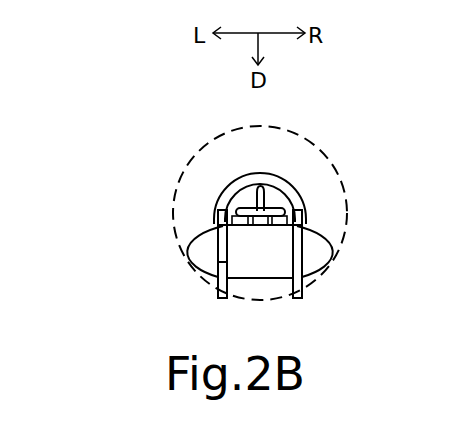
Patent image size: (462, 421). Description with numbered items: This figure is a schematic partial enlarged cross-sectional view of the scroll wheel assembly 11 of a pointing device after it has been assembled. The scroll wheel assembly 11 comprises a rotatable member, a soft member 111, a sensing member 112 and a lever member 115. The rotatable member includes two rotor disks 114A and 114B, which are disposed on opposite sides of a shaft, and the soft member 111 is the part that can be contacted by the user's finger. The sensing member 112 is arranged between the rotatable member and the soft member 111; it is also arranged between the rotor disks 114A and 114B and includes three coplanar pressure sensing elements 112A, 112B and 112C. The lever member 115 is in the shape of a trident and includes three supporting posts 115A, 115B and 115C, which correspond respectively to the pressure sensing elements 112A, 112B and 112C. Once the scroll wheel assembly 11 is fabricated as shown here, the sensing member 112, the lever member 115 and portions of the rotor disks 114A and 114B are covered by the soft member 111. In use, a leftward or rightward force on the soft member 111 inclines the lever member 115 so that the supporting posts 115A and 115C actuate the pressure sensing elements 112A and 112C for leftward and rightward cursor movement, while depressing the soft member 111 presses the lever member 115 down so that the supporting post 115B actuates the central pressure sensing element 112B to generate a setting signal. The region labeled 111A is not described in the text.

The scroll wheel assembly 11 is at (104, 81).
The soft member 111 is at (213, 188).
The stem 111A is at (261, 186).
The sensing member 112 is at (252, 265).
The pressure sensing element 112A is at (216, 210).
The pressure sensing element 112B is at (191, 264).
The pressure sensing element 112C is at (303, 212).
The rotor disk 114A is at (197, 258).
The rotor disk 114B is at (317, 252).
The lever member 115 is at (282, 172).
The supporting post 115A is at (230, 192).
The supporting post 115B is at (250, 193).
The supporting post 115C is at (298, 183).